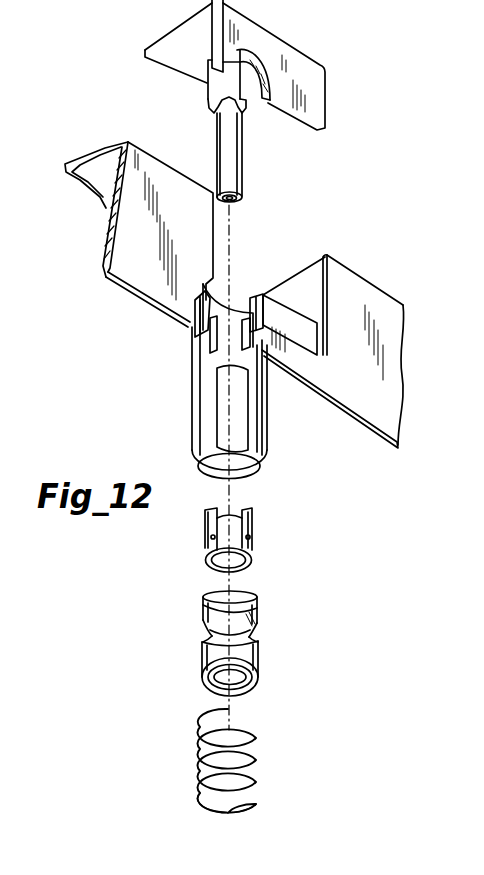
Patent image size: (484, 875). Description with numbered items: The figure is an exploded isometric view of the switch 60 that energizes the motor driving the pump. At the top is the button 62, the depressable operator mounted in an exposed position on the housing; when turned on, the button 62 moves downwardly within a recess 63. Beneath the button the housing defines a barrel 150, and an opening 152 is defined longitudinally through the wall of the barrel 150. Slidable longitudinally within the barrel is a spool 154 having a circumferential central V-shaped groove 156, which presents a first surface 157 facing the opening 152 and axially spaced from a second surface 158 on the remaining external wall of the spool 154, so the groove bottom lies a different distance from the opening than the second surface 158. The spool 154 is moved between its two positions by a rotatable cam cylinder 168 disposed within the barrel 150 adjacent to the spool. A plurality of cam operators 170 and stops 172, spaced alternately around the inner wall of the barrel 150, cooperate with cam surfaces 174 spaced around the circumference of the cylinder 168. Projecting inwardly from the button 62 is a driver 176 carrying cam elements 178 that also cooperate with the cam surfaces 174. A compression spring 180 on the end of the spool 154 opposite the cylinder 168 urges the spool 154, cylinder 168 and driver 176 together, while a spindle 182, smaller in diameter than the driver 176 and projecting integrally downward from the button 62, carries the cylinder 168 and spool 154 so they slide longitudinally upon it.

The switch 60 is at (283, 229).
The button 62 is at (296, 53).
The recess 63 is at (315, 280).
The barrel 150 is at (262, 412).
The opening 152 is at (198, 418).
The spool 154 is at (253, 622).
The V-shaped groove 156 is at (246, 636).
The first surface 157 is at (210, 642).
The second surface 158 is at (202, 607).
The cam cylinder 168 is at (252, 549).
The cam operators 170 is at (226, 348).
The stops 172 is at (237, 300).
The cam surfaces 174 is at (247, 510).
The driver 176 is at (213, 81).
The cam elements 178 is at (245, 122).
The compression spring 180 is at (257, 737).
The spindle 182 is at (234, 156).